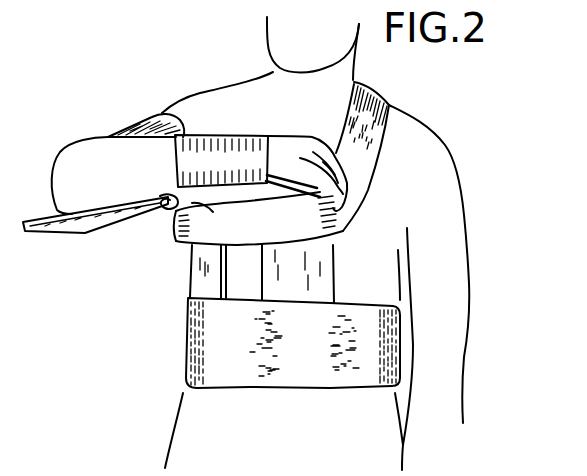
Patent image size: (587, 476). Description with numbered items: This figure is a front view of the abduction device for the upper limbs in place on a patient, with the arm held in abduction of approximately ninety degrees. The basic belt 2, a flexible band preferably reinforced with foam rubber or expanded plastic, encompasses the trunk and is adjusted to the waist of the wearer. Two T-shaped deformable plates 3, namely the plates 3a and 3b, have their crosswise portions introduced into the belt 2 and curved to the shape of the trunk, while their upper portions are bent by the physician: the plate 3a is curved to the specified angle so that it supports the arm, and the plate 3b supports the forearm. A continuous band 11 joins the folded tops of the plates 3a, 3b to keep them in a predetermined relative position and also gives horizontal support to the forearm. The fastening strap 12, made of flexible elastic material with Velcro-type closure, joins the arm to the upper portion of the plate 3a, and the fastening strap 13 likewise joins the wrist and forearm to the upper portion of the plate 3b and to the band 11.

The basic belt 2 is at (187, 350).
The deformable plate 3 is at (176, 257).
The deformable plate 3a is at (190, 280).
The deformable plate 3b is at (333, 253).
The continuous band 11 is at (157, 218).
The fastening strap 12 is at (140, 122).
The fastening strap 13 is at (233, 134).